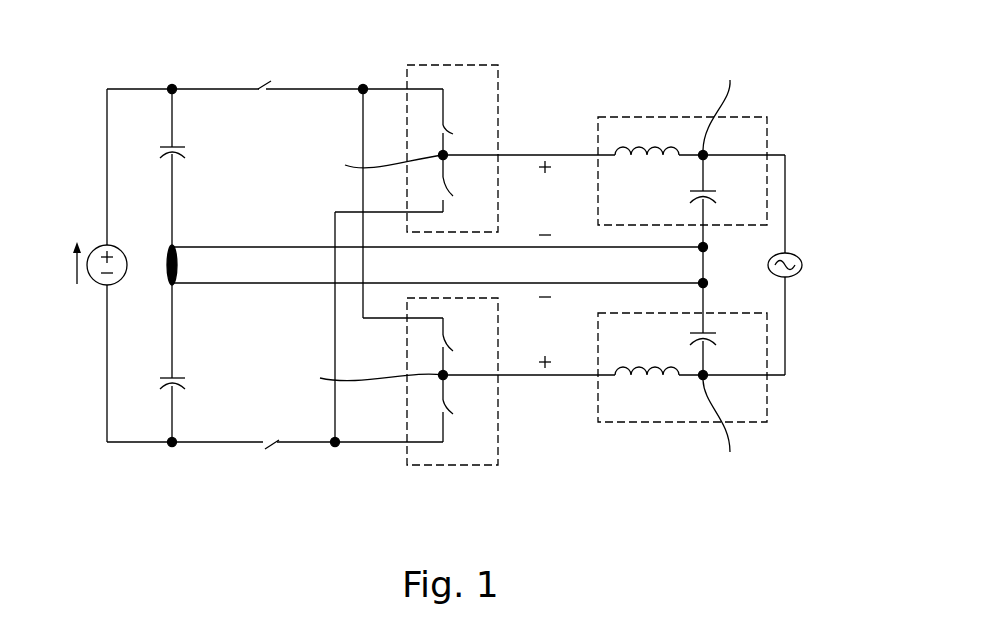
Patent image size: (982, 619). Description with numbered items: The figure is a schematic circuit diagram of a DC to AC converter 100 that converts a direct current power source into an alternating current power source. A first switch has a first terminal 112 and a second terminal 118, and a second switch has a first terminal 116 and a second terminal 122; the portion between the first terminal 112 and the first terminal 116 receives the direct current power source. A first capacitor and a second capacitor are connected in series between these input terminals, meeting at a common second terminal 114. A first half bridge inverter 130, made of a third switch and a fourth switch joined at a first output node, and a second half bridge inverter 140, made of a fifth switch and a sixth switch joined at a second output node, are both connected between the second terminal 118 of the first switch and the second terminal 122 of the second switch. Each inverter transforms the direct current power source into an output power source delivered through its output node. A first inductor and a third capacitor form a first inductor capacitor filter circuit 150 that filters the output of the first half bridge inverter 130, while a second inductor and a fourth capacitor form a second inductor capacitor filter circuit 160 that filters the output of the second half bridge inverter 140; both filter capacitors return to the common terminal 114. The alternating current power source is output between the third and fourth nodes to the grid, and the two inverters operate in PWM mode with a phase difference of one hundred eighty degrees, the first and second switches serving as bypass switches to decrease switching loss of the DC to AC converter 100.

The DC to AC converter 100 is at (806, 536).
The first terminal of the first switch 112 is at (172, 84).
The second terminal of the first capacitor 114 is at (175, 243).
The first terminal of the second switch 116 is at (172, 447).
The second terminal of the first switch 118 is at (363, 84).
The second terminal of the second switch 122 is at (335, 447).
The first half bridge inverter 130 is at (460, 65).
The second half bridge inverter 140 is at (443, 465).
The first inductor capacitor filter circuit 150 is at (637, 117).
The second inductor capacitor filter circuit 160 is at (637, 422).